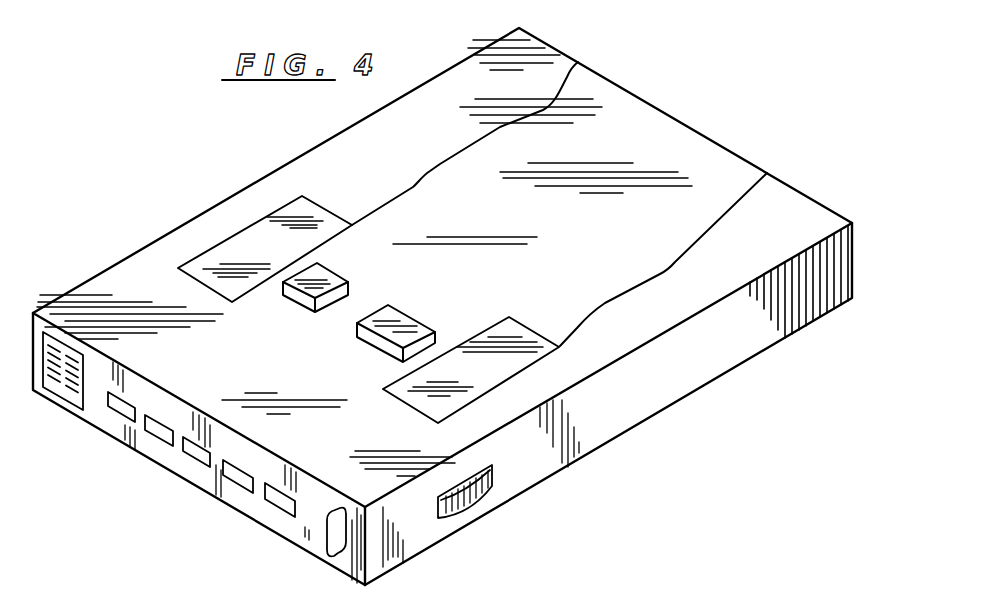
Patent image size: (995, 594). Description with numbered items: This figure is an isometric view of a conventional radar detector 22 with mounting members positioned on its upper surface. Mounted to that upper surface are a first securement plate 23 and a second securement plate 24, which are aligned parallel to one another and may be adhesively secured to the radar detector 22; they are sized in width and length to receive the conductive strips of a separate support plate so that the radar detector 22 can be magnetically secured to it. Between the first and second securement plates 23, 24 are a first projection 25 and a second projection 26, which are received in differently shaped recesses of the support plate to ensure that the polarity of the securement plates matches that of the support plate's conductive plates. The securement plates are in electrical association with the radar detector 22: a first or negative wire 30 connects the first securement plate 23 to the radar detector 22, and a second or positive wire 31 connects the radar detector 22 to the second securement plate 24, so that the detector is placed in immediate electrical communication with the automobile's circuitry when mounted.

The radar detector 22 is at (690, 117).
The first securement plate 23 is at (328, 212).
The second securement plate 24 is at (521, 331).
The first projection 25 is at (337, 278).
The second projection 26 is at (421, 327).
The first or negative wire 30 is at (421, 181).
The second or positive wire 31 is at (605, 303).